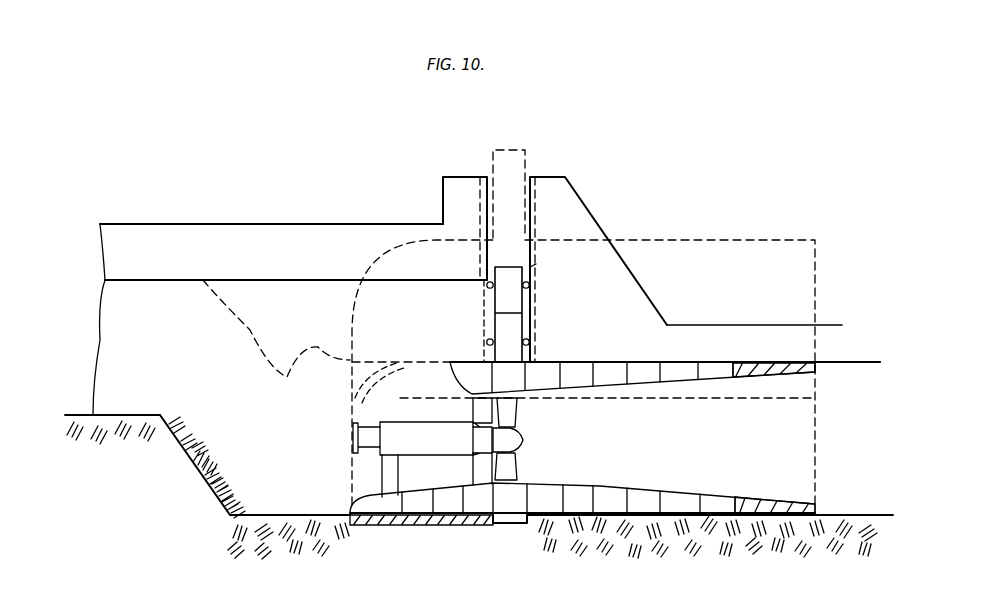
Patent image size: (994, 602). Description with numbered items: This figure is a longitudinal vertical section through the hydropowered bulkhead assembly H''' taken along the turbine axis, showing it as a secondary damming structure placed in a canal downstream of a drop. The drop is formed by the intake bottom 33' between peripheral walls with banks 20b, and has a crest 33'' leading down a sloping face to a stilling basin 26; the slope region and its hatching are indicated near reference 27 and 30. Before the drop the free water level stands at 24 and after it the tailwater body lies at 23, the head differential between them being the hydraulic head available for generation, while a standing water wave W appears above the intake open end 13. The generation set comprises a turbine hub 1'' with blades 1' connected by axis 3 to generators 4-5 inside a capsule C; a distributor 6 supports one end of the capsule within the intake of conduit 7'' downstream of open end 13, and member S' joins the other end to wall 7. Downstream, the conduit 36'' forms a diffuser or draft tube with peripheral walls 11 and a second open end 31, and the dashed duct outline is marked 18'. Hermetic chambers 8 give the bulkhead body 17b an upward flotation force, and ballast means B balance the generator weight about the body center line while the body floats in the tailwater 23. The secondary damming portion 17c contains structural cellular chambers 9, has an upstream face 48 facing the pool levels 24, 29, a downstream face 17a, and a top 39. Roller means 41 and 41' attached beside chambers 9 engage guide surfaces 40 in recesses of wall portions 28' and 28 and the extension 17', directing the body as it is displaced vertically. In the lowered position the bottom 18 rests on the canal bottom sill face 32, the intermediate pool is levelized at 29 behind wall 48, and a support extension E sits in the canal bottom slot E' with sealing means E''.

The banks 20b is at (243, 224).
The free water level 24 is at (159, 268).
The intermediate pool level 29 is at (260, 276).
The bank / structure 30 is at (160, 337).
The intake open end 13 is at (381, 262).
The standing water wave W is at (327, 343).
The top 39 is at (520, 150).
The face 48 is at (485, 165).
The wall portions 28' is at (434, 255).
The housing extension 17' is at (563, 250).
The gap 40 is at (479, 200).
The pier wall 28 is at (598, 269).
The bulkhead body 17b is at (733, 240).
The structural cellular chambers 9 is at (514, 300).
The rollers 41 is at (514, 294).
The roller means 41' is at (503, 343).
The secondary damming portion 17c is at (531, 263).
The downstream face 17a is at (530, 320).
The hydropowered bulkhead assembly H''' is at (683, 318).
The tailwater body 23 is at (858, 358).
The hermetic chambers 8 is at (482, 388).
The ballast means B is at (765, 362).
The peripheral walls 11 is at (620, 396).
The duct 18' is at (767, 414).
The conduit 36'' is at (673, 441).
The second open end 31 is at (817, 478).
The intake bottom 33' is at (112, 394).
The crest 33'' is at (187, 404).
The slope 27 is at (203, 473).
The stilling basin 26 is at (271, 515).
The canal bottom sill face 32 is at (396, 526).
The extension or support E is at (510, 548).
The canal bottom slot E' is at (483, 544).
The sealing means E'' is at (547, 538).
The bottom 18 is at (710, 537).
The generators 4-5 is at (426, 438).
The capsule C is at (392, 422).
The distributor 6 is at (487, 421).
The axis 3 is at (482, 453).
The turbine hub 1'' is at (508, 440).
The blades 1' is at (518, 439).
The intake conduit 7'' is at (409, 476).
The wall 7 is at (355, 477).
The member S' is at (373, 471).